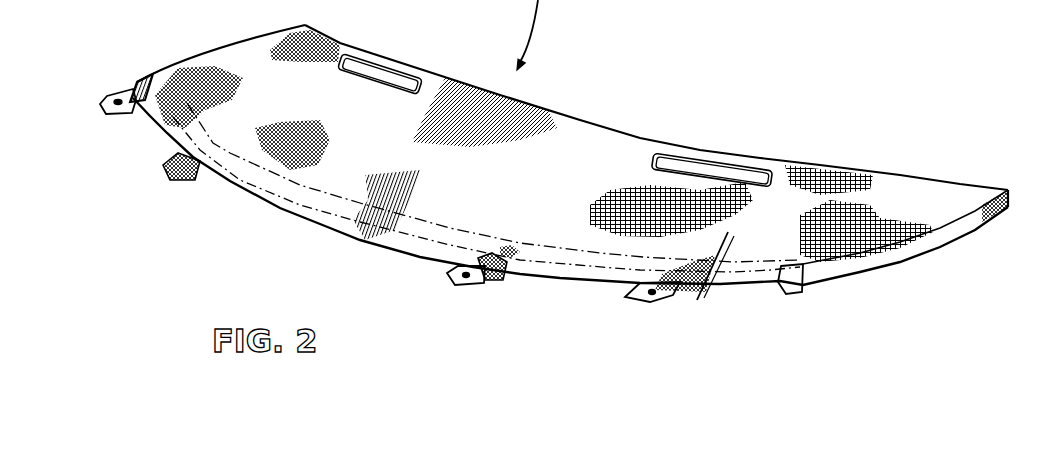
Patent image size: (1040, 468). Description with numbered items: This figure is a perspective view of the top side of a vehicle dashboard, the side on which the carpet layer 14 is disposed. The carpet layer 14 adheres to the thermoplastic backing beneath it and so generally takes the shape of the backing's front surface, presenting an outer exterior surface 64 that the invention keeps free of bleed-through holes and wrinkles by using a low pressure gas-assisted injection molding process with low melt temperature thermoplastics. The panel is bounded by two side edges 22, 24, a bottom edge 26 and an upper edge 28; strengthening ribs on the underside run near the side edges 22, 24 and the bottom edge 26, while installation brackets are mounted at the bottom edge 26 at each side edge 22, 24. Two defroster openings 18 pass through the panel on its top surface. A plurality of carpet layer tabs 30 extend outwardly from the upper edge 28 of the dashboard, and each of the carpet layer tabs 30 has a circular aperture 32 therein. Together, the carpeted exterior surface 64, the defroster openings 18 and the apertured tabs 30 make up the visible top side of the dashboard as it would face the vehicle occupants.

The carpet layer 14 is at (700, 285).
The defroster openings 18 is at (378, 82).
The side edge 22 is at (190, 51).
The side edge 24 is at (910, 270).
The bottom edge 26 is at (552, 110).
The upper edge 28 is at (252, 210).
The carpet layer tabs 30 is at (170, 163).
The circular aperture 32 is at (172, 176).
The exterior surface 64 is at (485, 185).